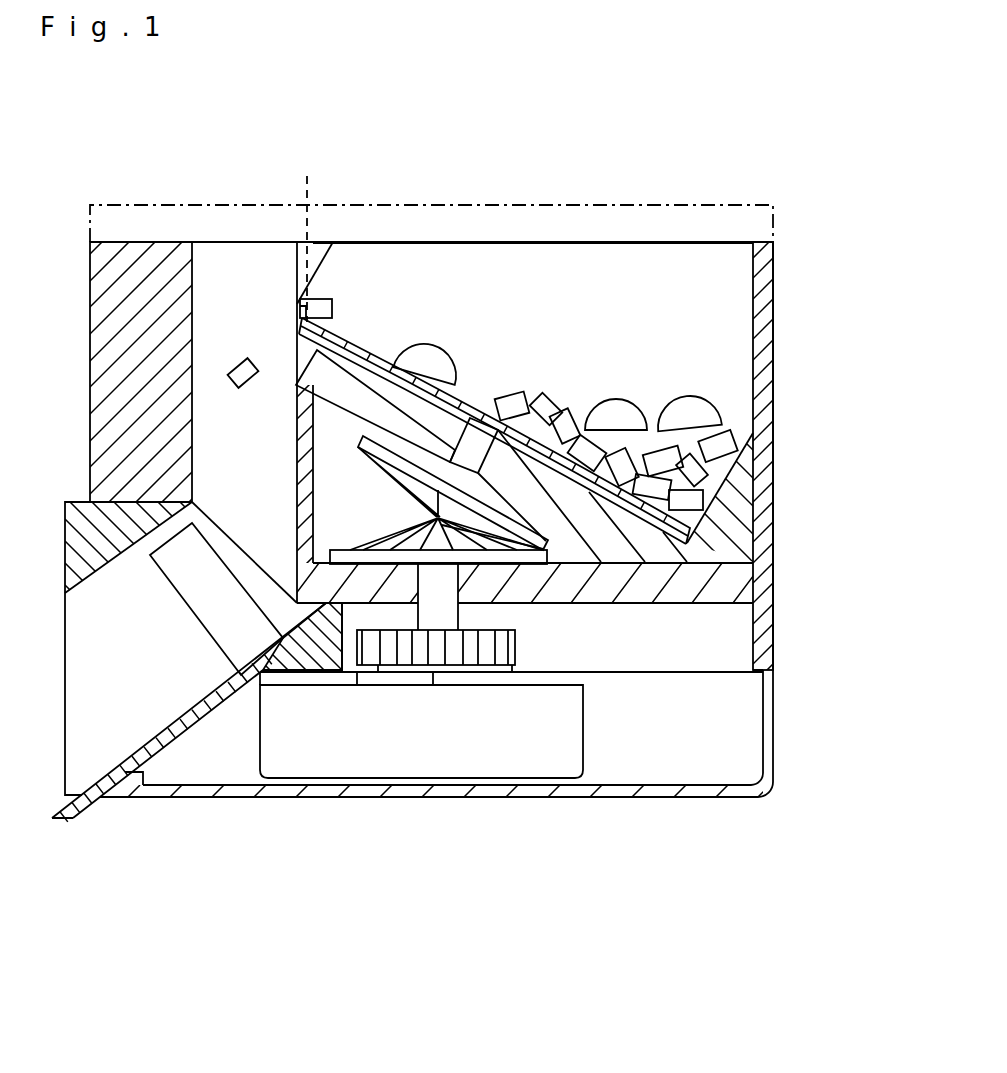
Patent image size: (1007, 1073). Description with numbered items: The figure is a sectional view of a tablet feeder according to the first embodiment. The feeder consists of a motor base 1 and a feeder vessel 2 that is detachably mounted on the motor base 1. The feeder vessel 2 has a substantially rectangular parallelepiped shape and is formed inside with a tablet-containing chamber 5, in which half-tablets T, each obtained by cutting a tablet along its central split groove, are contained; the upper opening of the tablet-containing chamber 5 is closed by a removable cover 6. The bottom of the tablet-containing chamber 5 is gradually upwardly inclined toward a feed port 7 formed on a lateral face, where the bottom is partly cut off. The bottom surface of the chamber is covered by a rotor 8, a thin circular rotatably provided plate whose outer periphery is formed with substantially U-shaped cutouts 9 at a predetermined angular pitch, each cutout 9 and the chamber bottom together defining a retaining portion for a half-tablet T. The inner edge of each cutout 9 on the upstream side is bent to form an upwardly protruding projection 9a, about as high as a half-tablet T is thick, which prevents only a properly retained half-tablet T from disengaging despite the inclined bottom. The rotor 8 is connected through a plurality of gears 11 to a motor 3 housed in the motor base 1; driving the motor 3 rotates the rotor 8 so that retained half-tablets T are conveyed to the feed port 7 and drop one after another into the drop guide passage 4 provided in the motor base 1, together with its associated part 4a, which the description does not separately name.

The motor base 1 is at (775, 728).
The feeder vessel 2 is at (774, 478).
The motor 3 is at (518, 762).
The drop guide passage 4 is at (133, 677).
The chute flap 4a is at (170, 583).
The tablet-containing chamber 5 is at (717, 356).
The removable cover 6 is at (774, 207).
The feed port 7 is at (297, 322).
The rotor 8 is at (372, 347).
The cutout 9 is at (697, 525).
The projection 9a is at (307, 237).
The gears 11 is at (370, 507).
The half-tablet T is at (227, 370).